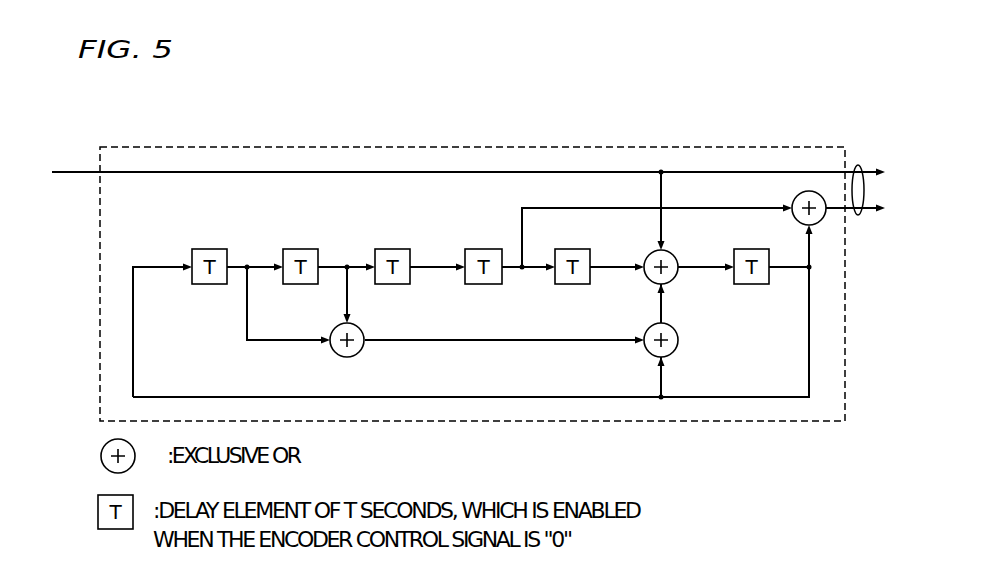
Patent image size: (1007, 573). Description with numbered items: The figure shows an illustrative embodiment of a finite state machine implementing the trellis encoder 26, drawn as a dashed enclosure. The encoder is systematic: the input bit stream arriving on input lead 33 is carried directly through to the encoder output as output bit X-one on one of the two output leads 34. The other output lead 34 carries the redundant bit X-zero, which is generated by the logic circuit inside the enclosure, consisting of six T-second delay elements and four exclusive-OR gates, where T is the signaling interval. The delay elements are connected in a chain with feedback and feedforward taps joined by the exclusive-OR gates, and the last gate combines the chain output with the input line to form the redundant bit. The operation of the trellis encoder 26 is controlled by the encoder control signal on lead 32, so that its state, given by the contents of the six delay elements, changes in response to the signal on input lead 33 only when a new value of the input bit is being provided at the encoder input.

The trellis encoder 26 is at (183, 147).
The lead carrying encoder control signal 32 is at (472, 147).
The input lead 33 is at (83, 173).
The output leads 34 is at (862, 165).